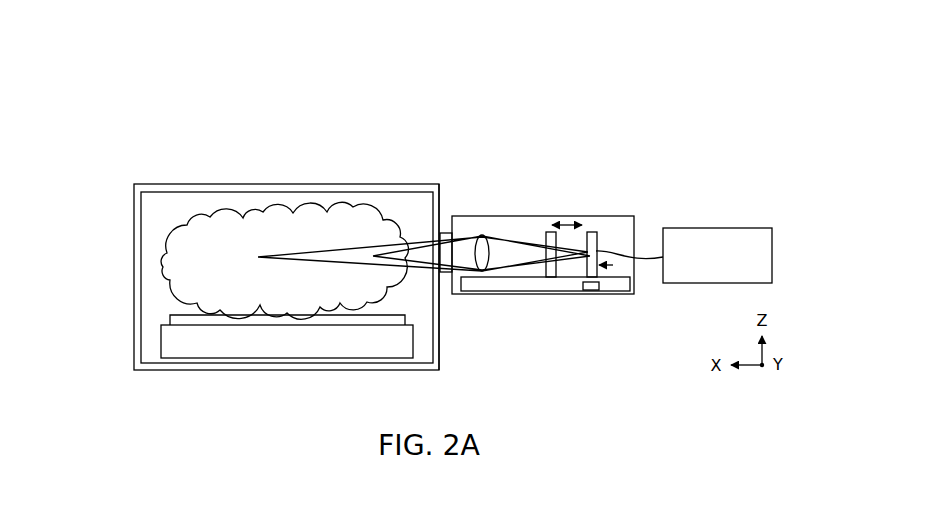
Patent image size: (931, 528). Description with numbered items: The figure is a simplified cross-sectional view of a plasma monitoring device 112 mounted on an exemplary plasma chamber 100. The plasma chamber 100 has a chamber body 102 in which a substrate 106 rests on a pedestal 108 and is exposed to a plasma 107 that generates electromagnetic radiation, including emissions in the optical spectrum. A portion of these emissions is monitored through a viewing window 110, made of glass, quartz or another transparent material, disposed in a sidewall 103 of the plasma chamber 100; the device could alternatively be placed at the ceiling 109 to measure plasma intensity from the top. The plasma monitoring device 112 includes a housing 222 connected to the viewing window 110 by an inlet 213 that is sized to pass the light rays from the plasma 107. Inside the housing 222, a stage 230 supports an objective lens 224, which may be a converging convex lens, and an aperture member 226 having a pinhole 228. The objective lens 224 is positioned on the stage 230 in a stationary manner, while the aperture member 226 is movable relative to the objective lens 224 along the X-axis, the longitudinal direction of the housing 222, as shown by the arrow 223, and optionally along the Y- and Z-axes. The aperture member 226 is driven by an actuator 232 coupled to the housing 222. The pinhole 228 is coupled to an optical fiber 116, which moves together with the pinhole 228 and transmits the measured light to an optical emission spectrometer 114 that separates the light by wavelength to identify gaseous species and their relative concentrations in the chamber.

The plasma chamber 100 is at (137, 172).
The chamber body 102 is at (362, 184).
The sidewall 103 is at (439, 303).
The substrate 106 is at (384, 315).
The plasma 107 is at (207, 222).
The pedestal 108 is at (287, 341).
The ceiling 109 is at (288, 184).
The viewing window 110 is at (440, 237).
The plasma monitoring device 112 is at (558, 139).
The optical emission spectrometer 114 is at (717, 228).
The optical fiber 116 is at (622, 247).
The inlet 213 is at (446, 236).
The housing 222 is at (495, 216).
The arrow 223 is at (568, 222).
The objective lens 224 is at (488, 258).
The aperture member 226 is at (613, 265).
The pinhole 228 is at (589, 231).
The stage 230 is at (547, 284).
The actuator 232 is at (590, 290).